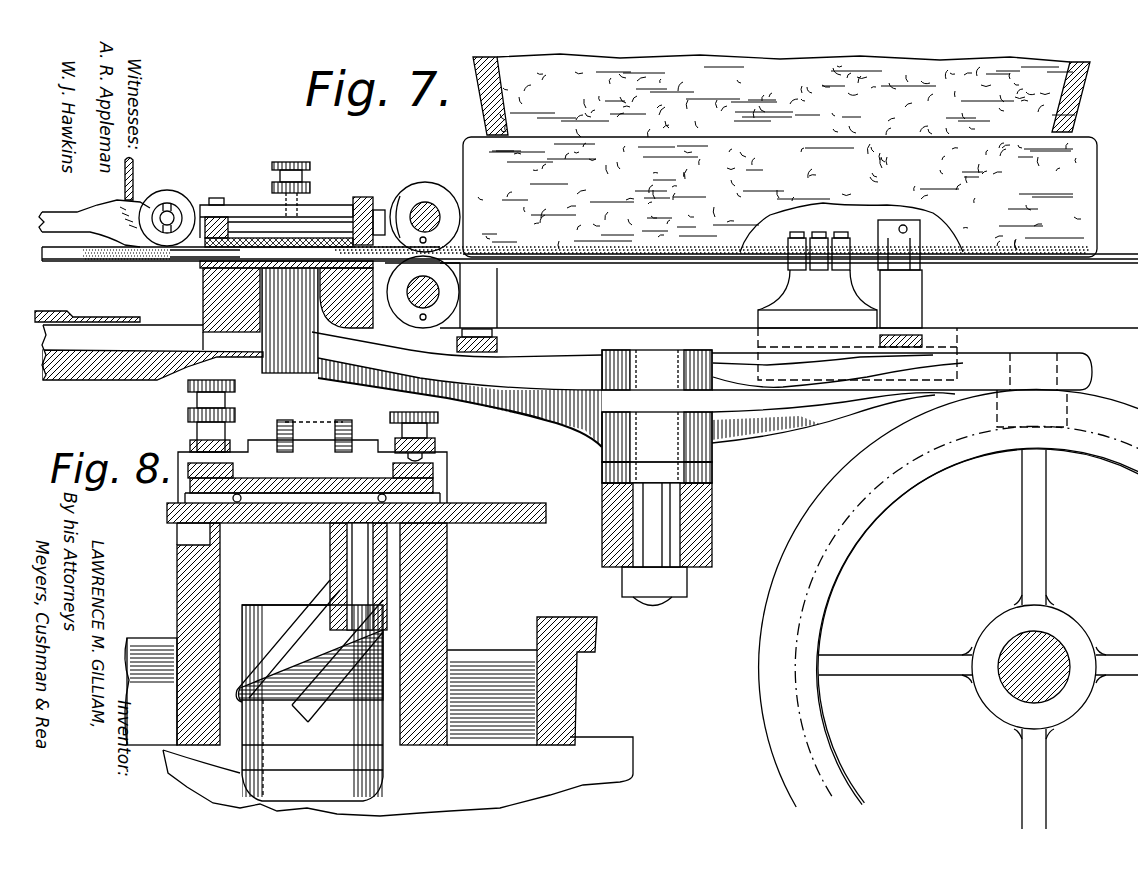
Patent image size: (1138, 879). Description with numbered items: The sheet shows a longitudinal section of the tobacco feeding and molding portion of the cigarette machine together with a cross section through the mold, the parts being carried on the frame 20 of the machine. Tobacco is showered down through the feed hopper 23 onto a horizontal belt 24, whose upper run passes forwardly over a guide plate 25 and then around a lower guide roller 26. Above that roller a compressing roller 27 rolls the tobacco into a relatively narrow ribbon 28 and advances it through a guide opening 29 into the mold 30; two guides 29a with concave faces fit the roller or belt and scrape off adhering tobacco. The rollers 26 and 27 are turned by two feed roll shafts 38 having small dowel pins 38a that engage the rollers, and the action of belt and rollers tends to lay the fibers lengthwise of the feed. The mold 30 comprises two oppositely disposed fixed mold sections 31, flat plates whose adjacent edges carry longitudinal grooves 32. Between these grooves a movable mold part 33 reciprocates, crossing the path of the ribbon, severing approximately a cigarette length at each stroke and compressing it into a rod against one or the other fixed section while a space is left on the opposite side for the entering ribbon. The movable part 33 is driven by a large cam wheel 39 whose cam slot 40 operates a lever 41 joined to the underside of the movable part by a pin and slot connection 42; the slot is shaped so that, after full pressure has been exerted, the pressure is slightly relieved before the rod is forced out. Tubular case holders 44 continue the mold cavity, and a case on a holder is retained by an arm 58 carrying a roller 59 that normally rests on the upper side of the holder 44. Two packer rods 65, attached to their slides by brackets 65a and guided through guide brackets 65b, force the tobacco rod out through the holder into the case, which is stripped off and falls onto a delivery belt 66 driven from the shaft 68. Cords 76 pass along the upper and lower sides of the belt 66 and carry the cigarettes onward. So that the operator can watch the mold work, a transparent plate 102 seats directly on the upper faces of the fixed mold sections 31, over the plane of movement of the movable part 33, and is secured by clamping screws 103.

In FIG. 8, the frame 20 is at (183, 632).
In FIG. 7, the feed hopper 23 is at (1083, 93).
In FIG. 7, the horizontal belt 24 is at (1112, 257).
In FIG. 7, the guide plate 25 is at (652, 256).
In FIG. 7, the lower guide roller 26 is at (448, 292).
In FIG. 7, the compressing roller 27 is at (426, 200).
In FIG. 7, the ribbon 28 is at (397, 300).
In FIG. 8, the ribbon 28 is at (313, 493).
In FIG. 7, the guide opening 29 is at (366, 196).
In FIG. 7, the guides 29a is at (397, 205).
In FIG. 7, the mold 30 is at (309, 189).
In FIG. 8, the fixed mold sections 31 is at (180, 500).
In FIG. 8, the longitudinal grooves 32 is at (240, 503).
In FIG. 8, the movable mold part 33 is at (427, 454).
In FIG. 7, the feed roll shafts 38 is at (434, 213).
In FIG. 7, the dowel pins 38a is at (428, 240).
In FIG. 7, the cam wheel 39 is at (964, 454).
In FIG. 7, the cam slot 40 is at (1124, 445).
In FIG. 7, the lever 41 is at (546, 398).
In FIG. 8, the lever 41 is at (312, 606).
In FIG. 7, the pin and slot connection 42 is at (275, 290).
In FIG. 8, the pin and slot connection 42 is at (355, 545).
In FIG. 7, the case holders 44 is at (180, 258).
In FIG. 7, the arm 58 is at (94, 203).
In FIG. 7, the roller 59 is at (168, 199).
In FIG. 7, the packer rods 65 is at (944, 255).
In FIG. 7, the brackets 65a is at (815, 272).
In FIG. 7, the guide brackets 65b is at (905, 312).
In FIG. 7, the delivery belt 66 is at (108, 323).
In FIG. 7, the shaft 68 is at (1016, 660).
In FIG. 7, the cords 76 is at (80, 318).
In FIG. 7, the transparent plate 102 is at (245, 238).
In FIG. 8, the transparent plate 102 is at (262, 490).
In FIG. 8, the clamping screws 103 is at (188, 414).